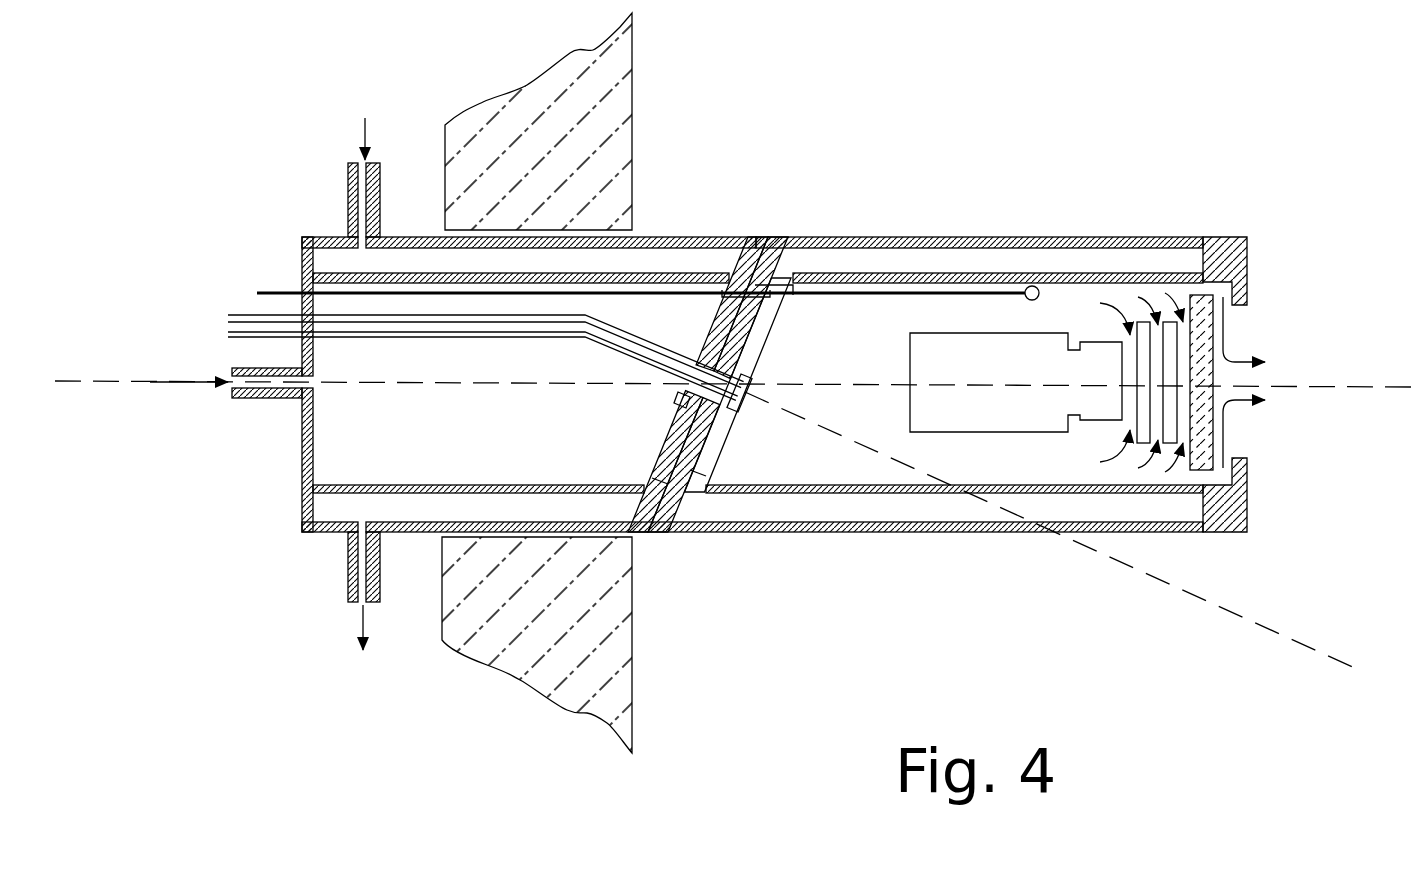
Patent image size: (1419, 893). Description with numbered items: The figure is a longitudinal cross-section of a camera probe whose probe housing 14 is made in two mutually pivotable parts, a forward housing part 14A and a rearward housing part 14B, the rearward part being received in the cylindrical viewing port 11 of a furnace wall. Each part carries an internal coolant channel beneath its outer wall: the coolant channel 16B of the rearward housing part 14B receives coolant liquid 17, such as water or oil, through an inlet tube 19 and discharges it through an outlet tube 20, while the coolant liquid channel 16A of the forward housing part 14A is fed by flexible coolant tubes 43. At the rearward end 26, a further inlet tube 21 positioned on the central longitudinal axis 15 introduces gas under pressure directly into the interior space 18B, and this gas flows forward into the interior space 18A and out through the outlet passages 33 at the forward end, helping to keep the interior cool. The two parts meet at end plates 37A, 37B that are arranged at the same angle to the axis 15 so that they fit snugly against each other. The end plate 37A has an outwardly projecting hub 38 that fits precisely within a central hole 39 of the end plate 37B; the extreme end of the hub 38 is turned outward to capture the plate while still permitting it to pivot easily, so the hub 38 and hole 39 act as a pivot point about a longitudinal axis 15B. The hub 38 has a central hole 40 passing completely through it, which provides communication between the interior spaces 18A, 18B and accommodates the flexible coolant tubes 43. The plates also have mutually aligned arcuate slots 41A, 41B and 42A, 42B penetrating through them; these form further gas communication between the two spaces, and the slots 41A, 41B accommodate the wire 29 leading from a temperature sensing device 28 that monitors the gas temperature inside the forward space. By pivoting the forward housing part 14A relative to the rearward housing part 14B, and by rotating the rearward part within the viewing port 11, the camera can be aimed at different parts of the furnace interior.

The viewing port 11 is at (430, 545).
The probe housing 14 is at (305, 237).
The forward housing part 14A is at (810, 237).
The rearward housing part 14B is at (680, 237).
The central longitudinal axis 15 is at (1310, 388).
The longitudinal axis 15B is at (1298, 640).
The coolant liquid channel 16A is at (998, 266).
The coolant channel 16B is at (521, 266).
The coolant liquid 17 is at (363, 384).
The interior space 18A is at (889, 348).
The interior space 18B is at (484, 468).
The inlet tube 19 is at (350, 190).
The outlet tube 20 is at (348, 582).
The inlet tube 21 is at (262, 365).
The rearward end 26 is at (300, 440).
The temperature sensing device 28 is at (1037, 297).
The wire 29 is at (962, 293).
The outlet passages 33 is at (1200, 478).
The end plate 37A is at (705, 420).
The end plate 37B is at (675, 430).
The hub 38 is at (724, 346).
The central hole 39 is at (680, 398).
The central hole 40 is at (705, 368).
The arcuate slot 41A is at (752, 312).
The arcuate slot 41B is at (740, 290).
The arcuate slot 42A is at (692, 483).
The arcuate slot 42B is at (667, 470).
The flexible coolant tubes 43 is at (492, 333).